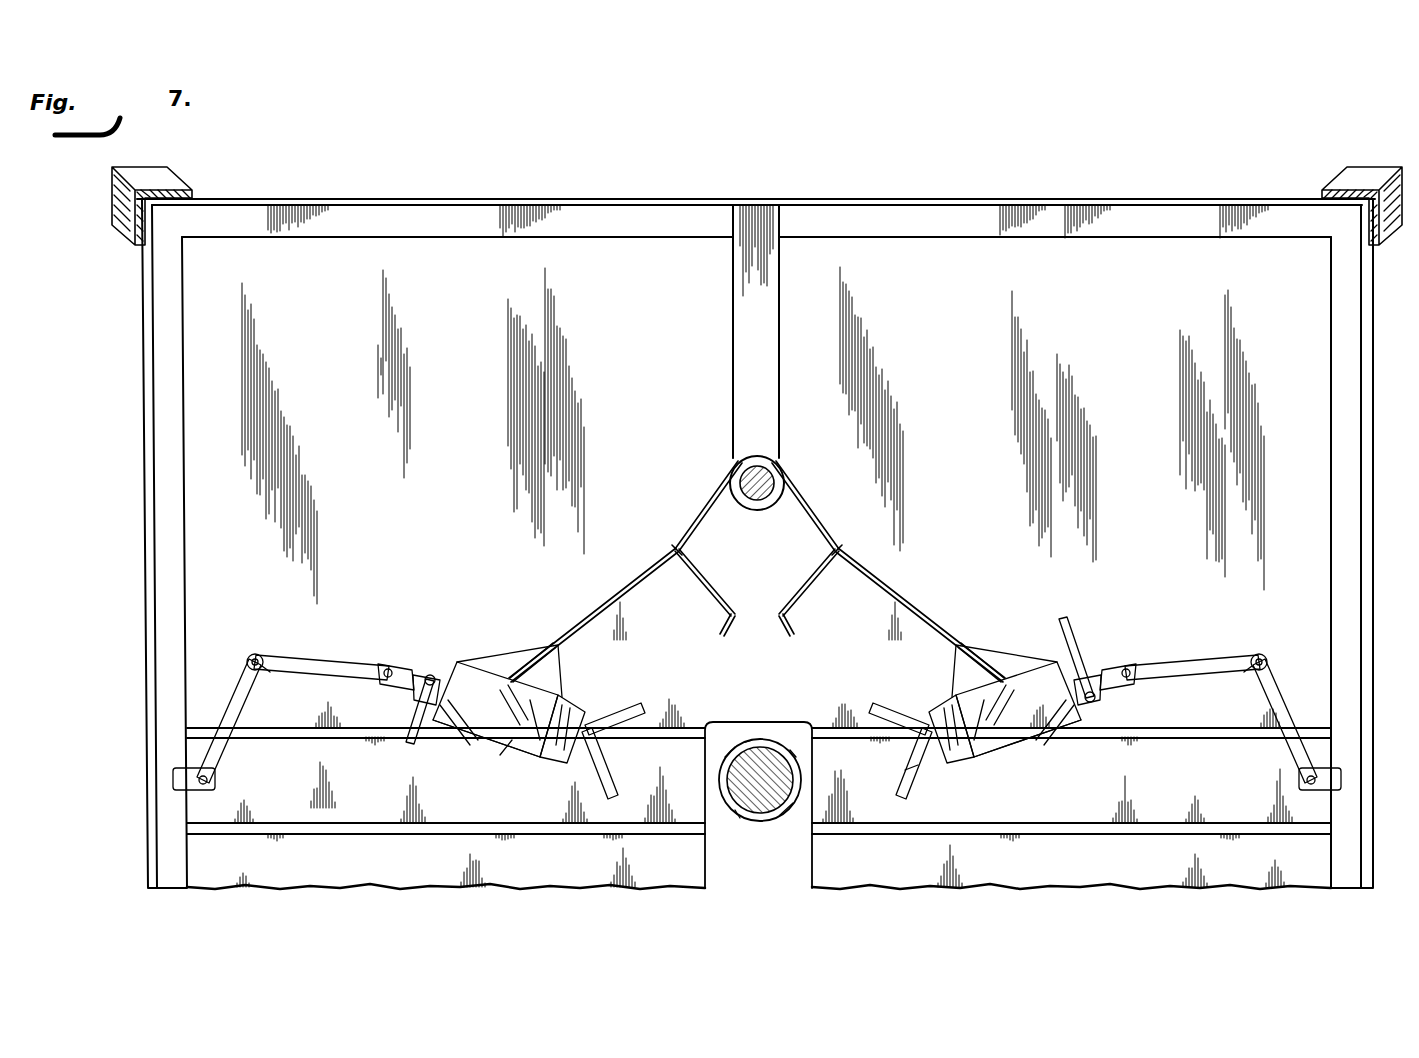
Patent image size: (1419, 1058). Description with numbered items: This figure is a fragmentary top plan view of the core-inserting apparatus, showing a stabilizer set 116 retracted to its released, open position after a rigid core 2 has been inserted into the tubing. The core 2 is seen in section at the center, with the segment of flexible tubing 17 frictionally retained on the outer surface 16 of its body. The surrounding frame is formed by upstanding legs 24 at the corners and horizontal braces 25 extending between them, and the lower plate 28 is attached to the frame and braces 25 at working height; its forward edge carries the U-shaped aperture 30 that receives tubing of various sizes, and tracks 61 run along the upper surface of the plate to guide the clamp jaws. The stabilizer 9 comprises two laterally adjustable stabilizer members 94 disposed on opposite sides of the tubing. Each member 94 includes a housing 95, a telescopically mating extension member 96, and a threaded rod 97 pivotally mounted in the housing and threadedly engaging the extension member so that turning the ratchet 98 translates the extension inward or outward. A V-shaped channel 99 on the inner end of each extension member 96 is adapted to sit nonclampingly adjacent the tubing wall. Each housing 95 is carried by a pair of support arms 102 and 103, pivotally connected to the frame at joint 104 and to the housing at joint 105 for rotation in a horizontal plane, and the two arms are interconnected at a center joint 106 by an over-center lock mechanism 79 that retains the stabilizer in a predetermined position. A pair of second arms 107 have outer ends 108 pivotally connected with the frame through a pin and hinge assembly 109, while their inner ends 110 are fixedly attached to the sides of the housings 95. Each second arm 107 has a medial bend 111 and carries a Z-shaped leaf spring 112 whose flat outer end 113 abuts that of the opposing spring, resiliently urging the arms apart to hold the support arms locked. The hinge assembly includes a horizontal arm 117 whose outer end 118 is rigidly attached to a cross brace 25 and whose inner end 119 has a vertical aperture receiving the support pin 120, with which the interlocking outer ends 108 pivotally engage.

The rigid core 2 is at (735, 805).
The stabilizer member 9 is at (507, 758).
The outer surface of core body 16 is at (762, 820).
The segment of flexible tubing 17 is at (798, 810).
The upstanding leg 24 is at (190, 178).
The horizontal brace 25 is at (590, 196).
The lower plate 28 is at (1008, 888).
The U-shaped aperture 30 is at (742, 722).
The track 61 is at (362, 826).
The over-center lock mechanism 79 is at (250, 655).
The laterally adjustable stabilizer member 94 is at (495, 728).
The stabilizer housing 95 is at (520, 760).
The extension member 96 is at (578, 700).
The threaded rod 97 is at (430, 675).
The ratchet 98 is at (410, 744).
The V-shaped channel 99 is at (614, 712).
The support arm 102 is at (360, 655).
The support arm 103 is at (230, 748).
The joint 104 is at (178, 790).
The joint 105 is at (392, 665).
The center joint 106 is at (262, 670).
The second arm 107 is at (618, 596).
The outer end of second arm 108 is at (722, 468).
The pin and hinge assembly 109 is at (762, 460).
The inner end of second arm 110 is at (562, 660).
The medial bend 111 is at (672, 553).
The Z-shaped leaf spring 112 is at (704, 581).
The flat outer end of leaf spring 113 is at (720, 630).
The stabilizer set 116 is at (905, 772).
The horizontally positioned arm 117 is at (733, 302).
The outer end of hinge arm 118 is at (785, 216).
The inner end of hinge arm 119 is at (734, 446).
The support pin 120 is at (765, 492).